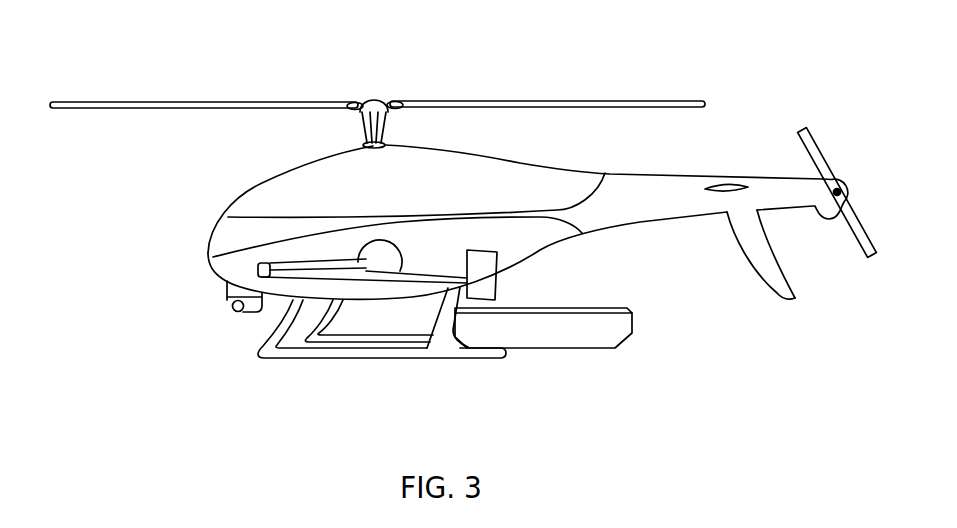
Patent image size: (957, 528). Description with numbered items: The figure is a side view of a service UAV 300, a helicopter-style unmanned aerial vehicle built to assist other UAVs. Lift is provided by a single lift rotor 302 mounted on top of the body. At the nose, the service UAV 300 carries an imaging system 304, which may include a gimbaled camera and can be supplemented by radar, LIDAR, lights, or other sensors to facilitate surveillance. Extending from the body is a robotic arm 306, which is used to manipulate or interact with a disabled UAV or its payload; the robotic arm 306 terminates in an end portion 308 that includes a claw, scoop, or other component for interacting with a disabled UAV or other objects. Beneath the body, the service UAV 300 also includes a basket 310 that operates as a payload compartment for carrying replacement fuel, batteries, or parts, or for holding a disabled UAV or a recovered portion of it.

The service UAV 300 is at (176, 62).
The lift rotor 302 is at (369, 100).
The imaging system 304 is at (232, 300).
The robotic arm 306 is at (347, 283).
The end portion 308 is at (488, 273).
The basket 310 is at (557, 337).